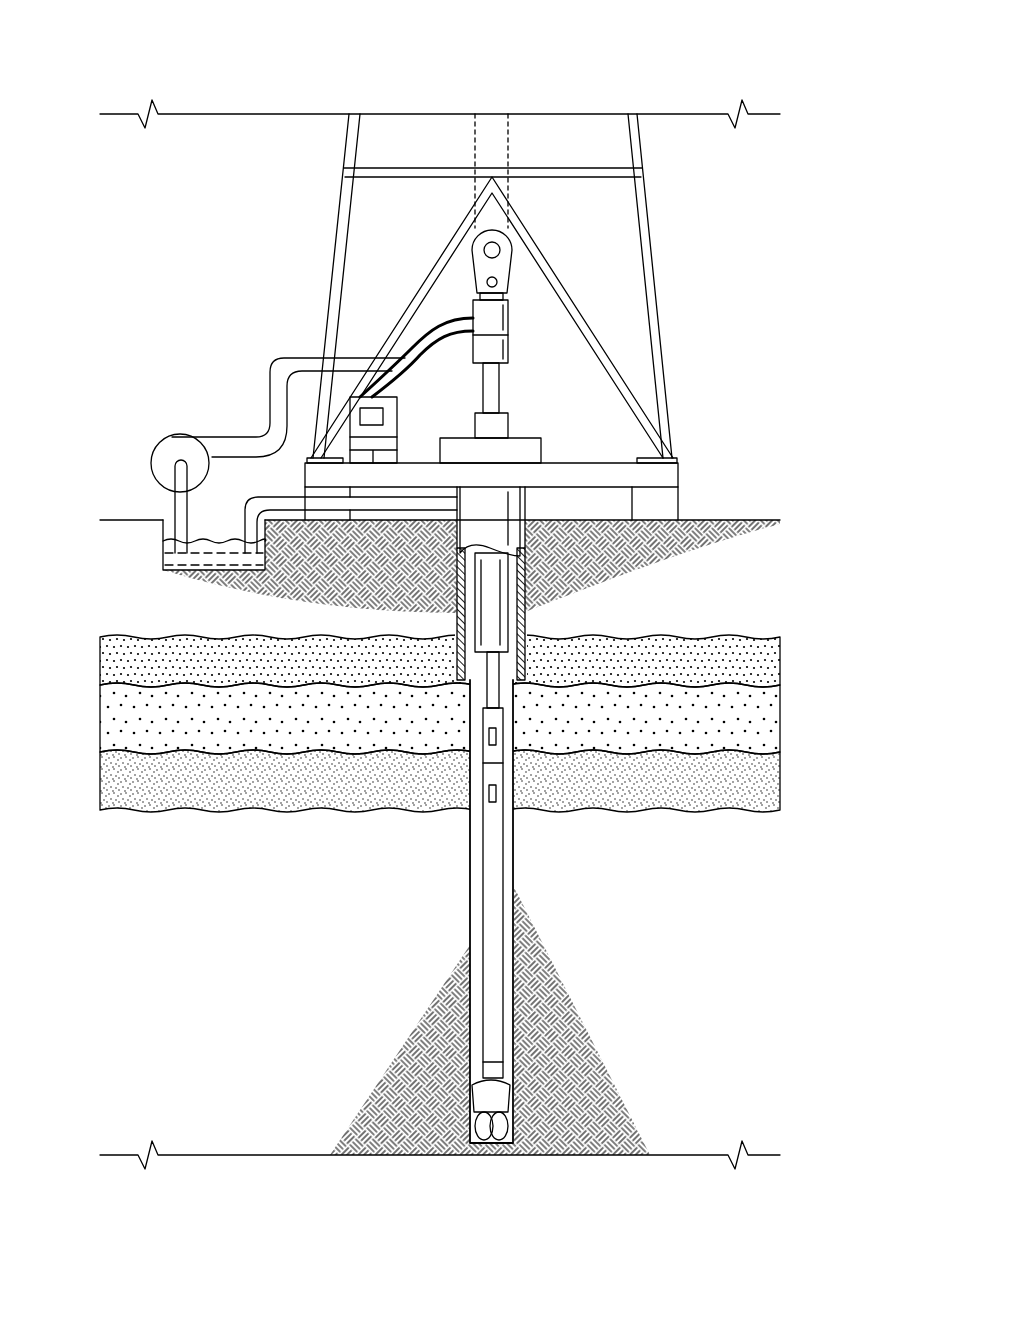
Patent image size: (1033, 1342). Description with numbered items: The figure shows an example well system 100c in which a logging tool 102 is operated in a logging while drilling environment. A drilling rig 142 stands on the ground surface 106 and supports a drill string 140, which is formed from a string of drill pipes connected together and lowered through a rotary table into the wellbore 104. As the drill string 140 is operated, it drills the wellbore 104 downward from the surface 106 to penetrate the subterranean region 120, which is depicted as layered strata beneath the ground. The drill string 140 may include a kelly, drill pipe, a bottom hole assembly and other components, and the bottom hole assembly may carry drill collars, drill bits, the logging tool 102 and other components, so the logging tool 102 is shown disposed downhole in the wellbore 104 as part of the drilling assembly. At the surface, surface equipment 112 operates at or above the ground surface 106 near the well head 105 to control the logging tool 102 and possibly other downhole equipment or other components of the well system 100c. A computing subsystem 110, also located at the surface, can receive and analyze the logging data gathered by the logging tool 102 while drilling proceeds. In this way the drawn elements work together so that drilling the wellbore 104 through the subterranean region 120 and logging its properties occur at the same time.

The well system 100c is at (212, 77).
The logging tool 102 is at (483, 880).
The wellbore 104 is at (469, 830).
The well head 105 is at (530, 438).
The ground surface 106 is at (718, 520).
The computing subsystem 110 is at (383, 384).
The surface equipment 112 is at (739, 309).
The subterranean region 120 is at (680, 623).
The drill string 140 is at (485, 688).
The drilling rig 142 is at (259, 239).